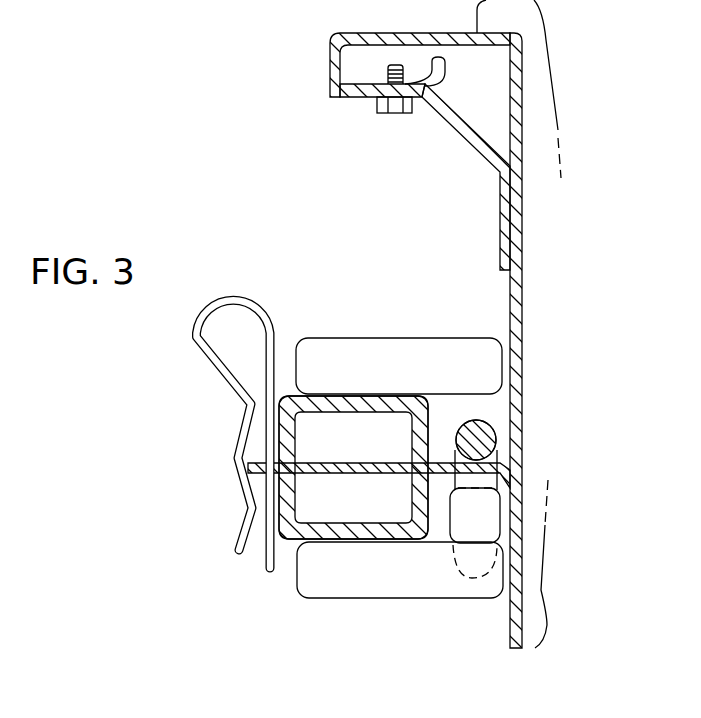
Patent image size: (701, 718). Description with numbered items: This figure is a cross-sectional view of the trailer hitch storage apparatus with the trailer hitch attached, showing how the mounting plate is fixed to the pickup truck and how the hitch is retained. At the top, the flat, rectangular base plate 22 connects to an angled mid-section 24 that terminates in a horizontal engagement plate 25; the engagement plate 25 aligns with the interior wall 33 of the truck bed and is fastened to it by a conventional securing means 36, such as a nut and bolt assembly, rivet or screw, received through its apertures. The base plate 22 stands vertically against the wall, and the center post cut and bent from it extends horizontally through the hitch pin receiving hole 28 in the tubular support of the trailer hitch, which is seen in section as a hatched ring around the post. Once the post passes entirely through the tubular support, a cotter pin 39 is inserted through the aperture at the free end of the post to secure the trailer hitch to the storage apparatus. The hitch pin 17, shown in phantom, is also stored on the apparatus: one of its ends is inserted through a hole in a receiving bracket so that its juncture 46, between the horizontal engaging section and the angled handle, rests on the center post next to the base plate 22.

The hitch pin 17 is at (478, 418).
The base plate 22 is at (505, 240).
The angled mid-section 24 is at (465, 128).
The horizontal engagement plate 25 is at (348, 100).
The hitch pin receiving hole 28 is at (288, 484).
The interior wall of truck bed 33 is at (330, 62).
The securing means 36 is at (393, 115).
The cotter pin 39 is at (203, 300).
The juncture 46 is at (510, 480).